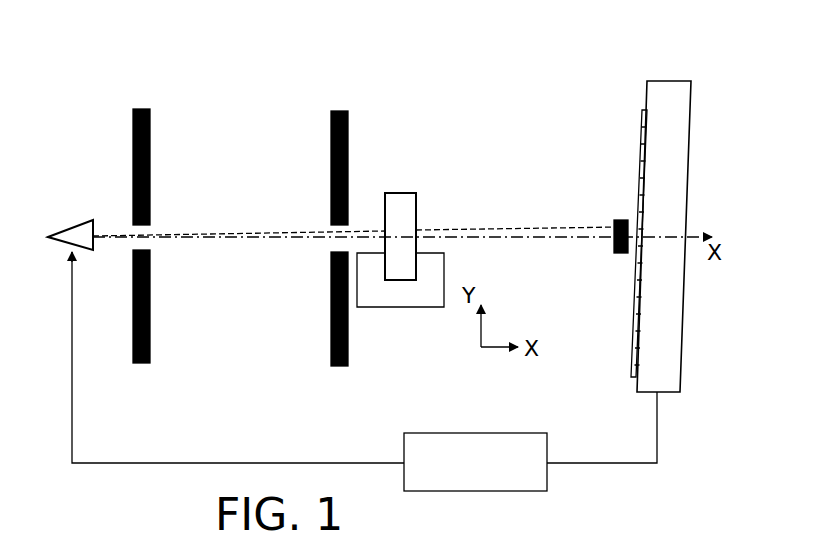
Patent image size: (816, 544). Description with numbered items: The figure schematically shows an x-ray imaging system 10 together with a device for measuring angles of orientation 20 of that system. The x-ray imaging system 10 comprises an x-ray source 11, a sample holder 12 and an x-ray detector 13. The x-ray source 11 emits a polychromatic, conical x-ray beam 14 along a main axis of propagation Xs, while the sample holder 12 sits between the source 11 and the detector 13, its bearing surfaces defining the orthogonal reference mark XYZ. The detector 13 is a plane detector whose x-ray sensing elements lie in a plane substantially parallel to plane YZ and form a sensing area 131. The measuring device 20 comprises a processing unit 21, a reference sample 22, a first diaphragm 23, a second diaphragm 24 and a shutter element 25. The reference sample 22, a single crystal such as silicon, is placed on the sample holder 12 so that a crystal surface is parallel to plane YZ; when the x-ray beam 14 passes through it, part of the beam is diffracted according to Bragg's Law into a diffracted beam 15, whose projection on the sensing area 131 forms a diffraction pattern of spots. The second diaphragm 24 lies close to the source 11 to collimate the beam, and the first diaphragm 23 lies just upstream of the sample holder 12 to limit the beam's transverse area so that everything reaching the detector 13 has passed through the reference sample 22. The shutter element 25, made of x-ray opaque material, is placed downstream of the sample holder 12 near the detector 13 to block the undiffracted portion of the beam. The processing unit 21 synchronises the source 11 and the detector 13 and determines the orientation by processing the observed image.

The x-ray imaging system 10 is at (265, 99).
The x-ray source 11 is at (72, 220).
The sample holder 12 is at (400, 308).
The x-ray detector 13 is at (638, 205).
The sensing area 131 is at (637, 117).
The polychromatic x-ray beam 14 is at (277, 230).
The diffracted beam 15 is at (530, 225).
The device for measuring angles of orientation 20 is at (419, 232).
The processing unit 21 is at (507, 432).
The reference sample 22 is at (416, 203).
The first diaphragm 23 is at (331, 350).
The second diaphragm 24 is at (133, 352).
The shutter element 25 is at (620, 255).